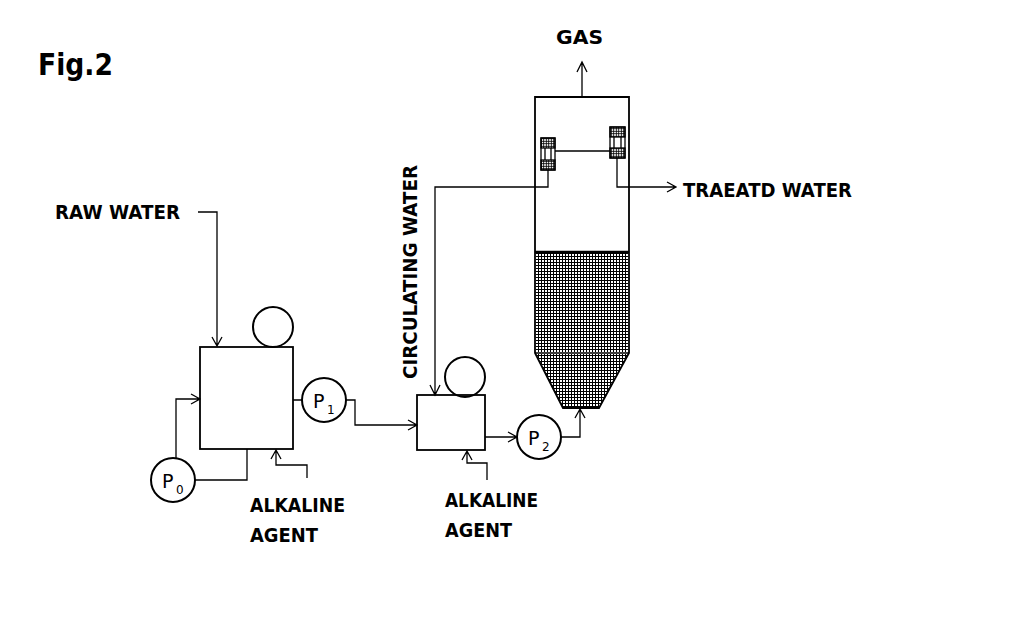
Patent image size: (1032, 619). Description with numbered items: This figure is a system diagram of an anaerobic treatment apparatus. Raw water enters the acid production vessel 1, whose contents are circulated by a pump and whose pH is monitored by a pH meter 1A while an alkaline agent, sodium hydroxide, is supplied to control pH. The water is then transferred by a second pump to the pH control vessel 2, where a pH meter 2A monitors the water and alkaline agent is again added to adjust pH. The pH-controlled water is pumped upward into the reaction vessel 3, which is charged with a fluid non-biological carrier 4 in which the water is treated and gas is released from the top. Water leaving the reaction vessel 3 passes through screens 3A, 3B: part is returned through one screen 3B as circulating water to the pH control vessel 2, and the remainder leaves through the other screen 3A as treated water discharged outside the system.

The acid production vessel 1 is at (200, 365).
The pH meter 1A is at (273, 307).
The pH control vessel 2 is at (432, 450).
The pH meter 2A is at (465, 357).
The reaction vessel 3 is at (629, 225).
The screen 3A is at (618, 127).
The screen 3B is at (546, 138).
The fluid non-biological carrier 4 is at (618, 308).